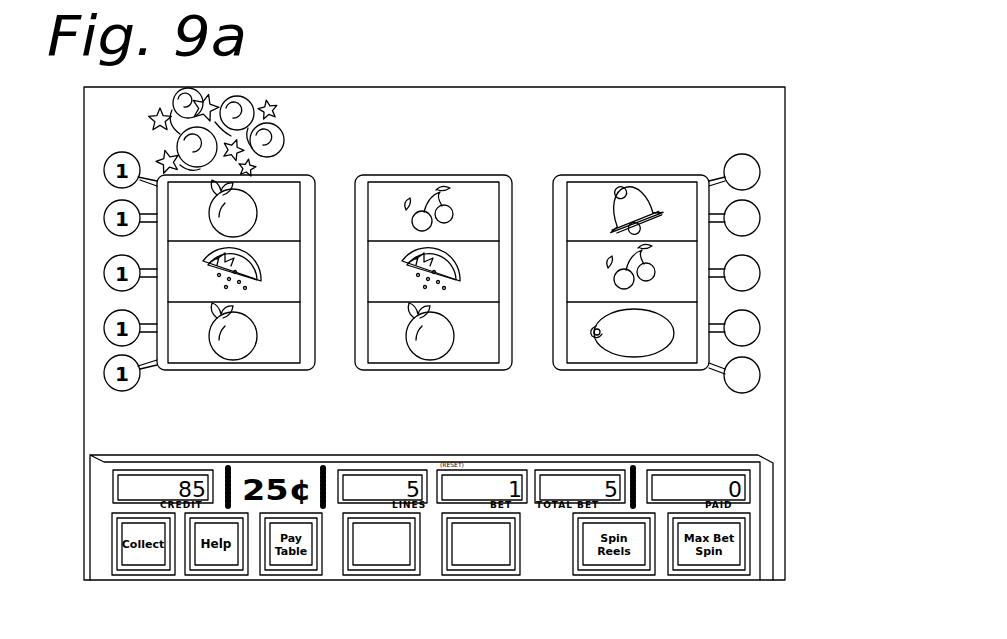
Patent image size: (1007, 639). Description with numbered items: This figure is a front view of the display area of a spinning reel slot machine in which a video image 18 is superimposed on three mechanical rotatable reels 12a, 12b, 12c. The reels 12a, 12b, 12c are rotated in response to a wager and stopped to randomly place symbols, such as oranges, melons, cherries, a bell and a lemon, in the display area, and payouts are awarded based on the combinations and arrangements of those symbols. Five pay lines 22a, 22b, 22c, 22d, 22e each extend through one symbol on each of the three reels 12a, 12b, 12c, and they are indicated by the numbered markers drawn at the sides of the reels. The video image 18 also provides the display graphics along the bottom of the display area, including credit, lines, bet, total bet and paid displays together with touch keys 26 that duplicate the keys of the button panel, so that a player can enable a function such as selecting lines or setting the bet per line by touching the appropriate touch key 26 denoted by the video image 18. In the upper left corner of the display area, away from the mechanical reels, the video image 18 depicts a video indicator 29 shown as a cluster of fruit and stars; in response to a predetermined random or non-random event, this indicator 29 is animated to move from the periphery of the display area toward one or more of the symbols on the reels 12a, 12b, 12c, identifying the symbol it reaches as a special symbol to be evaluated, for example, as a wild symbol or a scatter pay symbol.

The video image 18 is at (613, 112).
The video indicator 29 is at (238, 112).
The mechanical rotatable reel 12a is at (258, 191).
The mechanical rotatable reel 12b is at (465, 201).
The mechanical rotatable reel 12c is at (665, 196).
The pay line 22a is at (760, 177).
The pay line 22b is at (760, 223).
The pay line 22c is at (760, 278).
The pay line 22d is at (760, 333).
The pay line 22e is at (760, 380).
The touch keys 26 is at (462, 557).